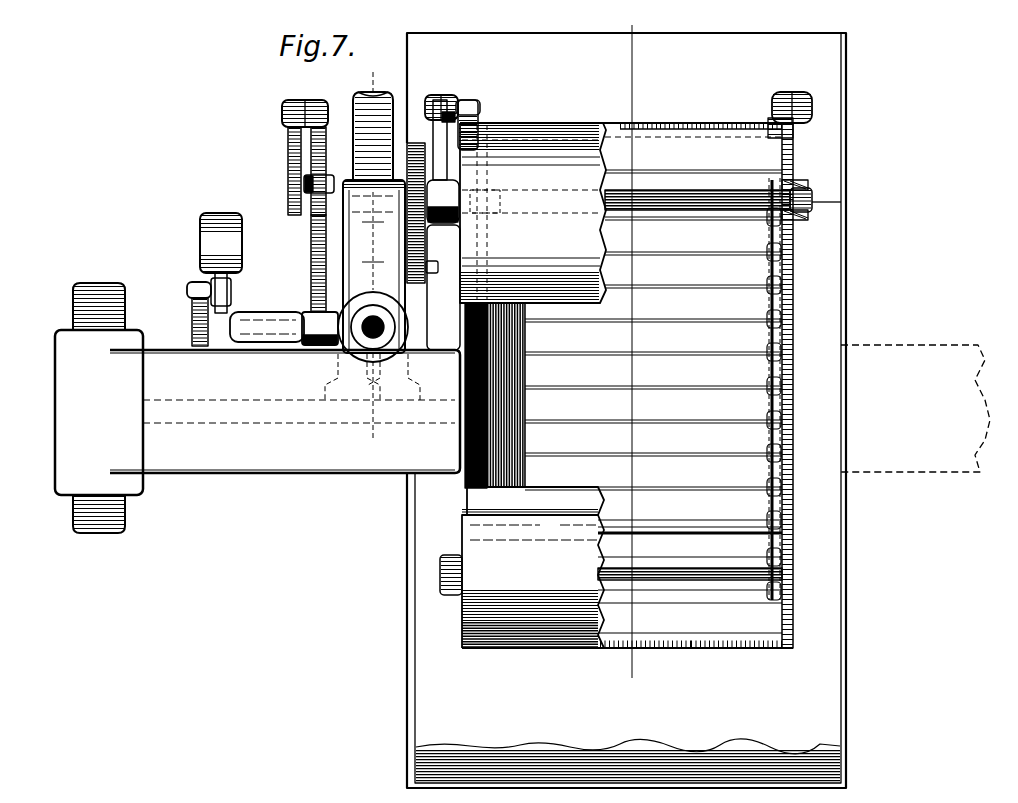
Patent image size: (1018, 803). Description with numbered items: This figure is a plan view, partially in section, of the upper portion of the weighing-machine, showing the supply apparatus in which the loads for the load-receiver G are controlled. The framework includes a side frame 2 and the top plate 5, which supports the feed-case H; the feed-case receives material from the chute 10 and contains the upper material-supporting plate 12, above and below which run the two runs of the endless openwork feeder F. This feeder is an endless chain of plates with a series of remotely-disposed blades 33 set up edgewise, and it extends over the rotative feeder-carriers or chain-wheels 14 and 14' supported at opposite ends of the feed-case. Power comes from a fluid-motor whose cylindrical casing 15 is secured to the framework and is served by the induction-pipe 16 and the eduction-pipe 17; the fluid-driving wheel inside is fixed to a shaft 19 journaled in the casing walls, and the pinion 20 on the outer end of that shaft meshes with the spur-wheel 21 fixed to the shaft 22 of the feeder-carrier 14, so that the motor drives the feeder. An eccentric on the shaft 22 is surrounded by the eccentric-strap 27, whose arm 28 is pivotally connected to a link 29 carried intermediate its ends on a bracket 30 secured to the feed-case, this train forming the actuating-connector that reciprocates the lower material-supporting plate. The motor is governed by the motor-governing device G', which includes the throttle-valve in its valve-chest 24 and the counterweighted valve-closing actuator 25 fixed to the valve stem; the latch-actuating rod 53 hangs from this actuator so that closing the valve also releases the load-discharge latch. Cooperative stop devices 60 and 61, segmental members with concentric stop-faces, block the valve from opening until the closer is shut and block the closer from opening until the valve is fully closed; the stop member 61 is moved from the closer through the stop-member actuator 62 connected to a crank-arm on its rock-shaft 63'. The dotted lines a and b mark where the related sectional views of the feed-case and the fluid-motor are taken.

The side frame 2 is at (96, 283).
The top plate 5 is at (285, 411).
The chute 10 is at (541, 515).
The upper material-supporting plate 12 is at (678, 540).
The feeder-carrier 14 is at (753, 389).
The feeder-carrier 14' is at (750, 568).
The cylindrical casing 15 is at (352, 254).
The induction-pipe 16 is at (390, 327).
The eduction-pipe 17 is at (360, 96).
The shaft 19 is at (432, 268).
The pinion 20 is at (420, 289).
The spur-wheel 21 is at (413, 222).
The shaft 22 is at (668, 197).
The valve-chest 24 is at (388, 318).
The counterweighted valve-closing actuator 25 is at (223, 214).
The eccentric-strap 27 is at (437, 224).
The arm 28 is at (434, 140).
The link 29 is at (452, 93).
The bracket 30 is at (467, 102).
The blades 33 is at (716, 488).
The latch-actuating rod 53 is at (192, 314).
The stop device 60 is at (311, 255).
The stop member 61 is at (310, 192).
The stop-member actuator 62 is at (297, 154).
The rock-shaft 63' is at (271, 180).
The section line a a is at (633, 352).
The section line b b is at (373, 256).
The endless openwork feeder F is at (623, 385).
The load-receiver G is at (698, 410).
The motor-governing device G' is at (233, 292).
The feed-case H is at (533, 213).